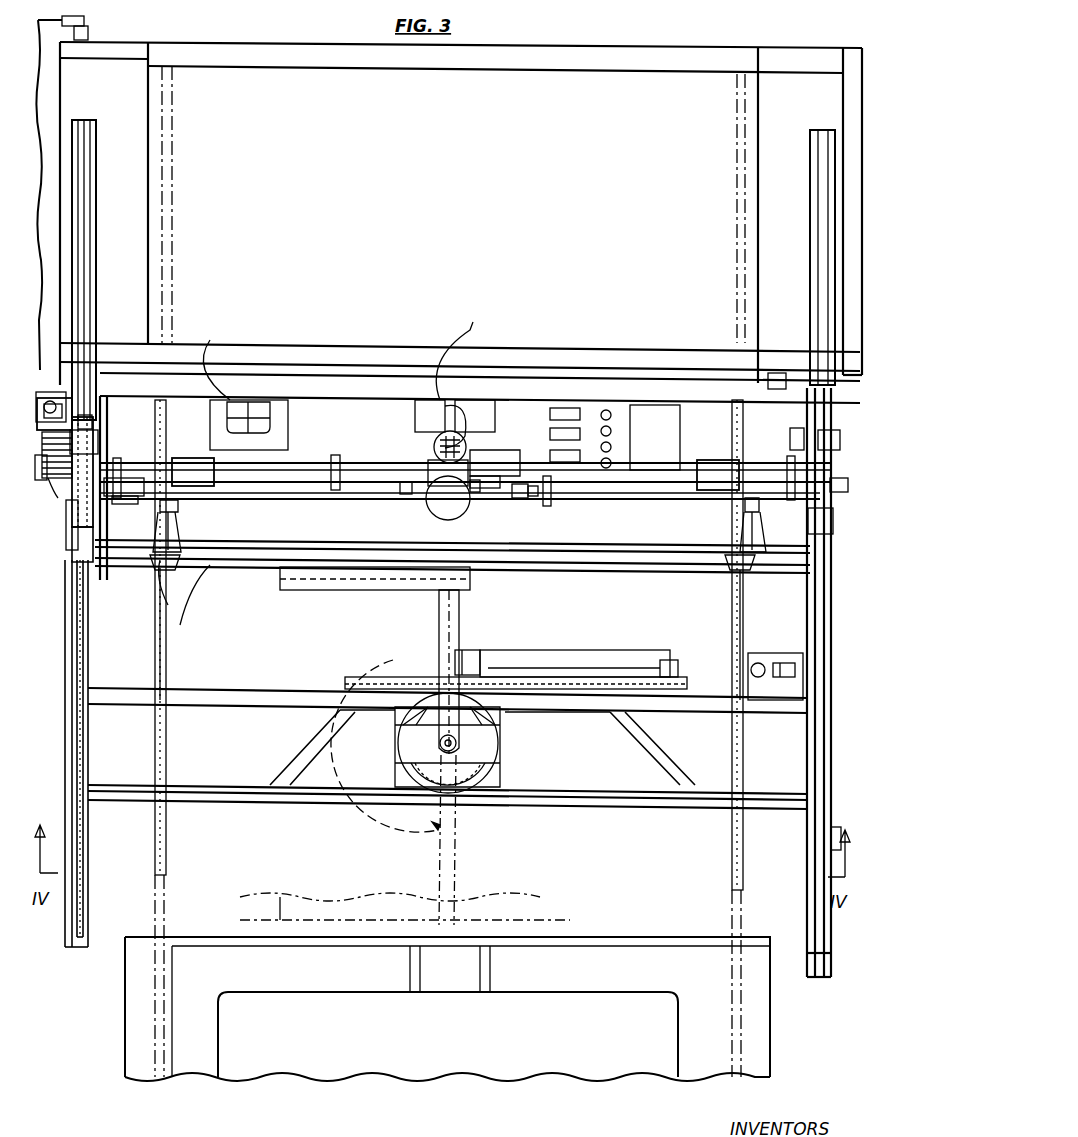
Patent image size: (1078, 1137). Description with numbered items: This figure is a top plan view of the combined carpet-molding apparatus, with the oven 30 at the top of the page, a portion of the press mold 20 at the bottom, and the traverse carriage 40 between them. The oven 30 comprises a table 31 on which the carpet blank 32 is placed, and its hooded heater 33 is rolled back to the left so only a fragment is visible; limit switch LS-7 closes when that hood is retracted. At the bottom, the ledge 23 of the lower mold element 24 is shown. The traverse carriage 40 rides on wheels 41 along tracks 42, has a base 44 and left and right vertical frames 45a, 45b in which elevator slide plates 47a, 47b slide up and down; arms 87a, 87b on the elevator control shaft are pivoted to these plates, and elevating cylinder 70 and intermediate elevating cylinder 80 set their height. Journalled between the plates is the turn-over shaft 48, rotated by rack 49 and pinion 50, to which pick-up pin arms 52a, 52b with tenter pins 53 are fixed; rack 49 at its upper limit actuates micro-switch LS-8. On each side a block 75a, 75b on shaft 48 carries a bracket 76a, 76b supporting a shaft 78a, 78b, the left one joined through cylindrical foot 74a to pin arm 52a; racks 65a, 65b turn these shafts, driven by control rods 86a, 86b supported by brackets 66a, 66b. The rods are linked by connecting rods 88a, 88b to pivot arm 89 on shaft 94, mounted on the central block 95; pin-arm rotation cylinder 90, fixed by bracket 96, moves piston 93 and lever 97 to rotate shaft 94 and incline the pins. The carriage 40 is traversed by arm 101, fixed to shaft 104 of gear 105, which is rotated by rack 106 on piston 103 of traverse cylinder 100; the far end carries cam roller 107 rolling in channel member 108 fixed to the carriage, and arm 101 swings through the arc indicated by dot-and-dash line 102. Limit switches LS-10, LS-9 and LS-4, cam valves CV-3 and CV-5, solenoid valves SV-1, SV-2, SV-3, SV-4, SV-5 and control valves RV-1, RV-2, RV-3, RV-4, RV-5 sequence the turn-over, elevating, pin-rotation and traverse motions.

The press mold 20 is at (110, 1080).
The ledge 23 is at (330, 1000).
The lower mold element 24 is at (260, 980).
The oven 30 is at (78, 116).
The table 31 is at (722, 58).
The carpet blank 32 is at (600, 88).
The hooded heater 33 is at (50, 268).
The traverse carriage 40 is at (58, 645).
The wheels 41 is at (86, 333).
The tracks 42 is at (84, 872).
The base 44 is at (230, 568).
The left vertical frame 45a is at (66, 535).
The right vertical frame 45b is at (833, 521).
The left elevator slide plate 47a is at (98, 445).
The right elevator slide plate 47b is at (839, 445).
The turn-over shaft 48 is at (309, 468).
The rack 49 is at (92, 425).
The pinion 50 is at (51, 458).
The left pick-up pin arm 52a is at (168, 165).
The right pick-up pin arm 52b is at (740, 150).
The tenter pins 53 is at (165, 740).
The rack 65a is at (150, 490).
The rack 65b is at (785, 510).
The brackets 66a is at (128, 510).
The brackets 66b is at (548, 508).
The elevating cylinder 70 is at (425, 505).
The cylindrical foot 74a is at (184, 588).
The block 75a is at (191, 458).
The block 75b is at (711, 460).
The bracket 76a is at (185, 508).
The bracket 76b is at (740, 508).
The shaft 78a is at (180, 530).
The shaft 78b is at (742, 532).
The intermediate elevating cylinder 80 is at (432, 440).
The pin-arm rotation control rods 86a is at (260, 500).
The pin-arm rotation control rods 86b is at (600, 498).
The arm 87a is at (141, 627).
The arm 87b is at (738, 545).
The connecting rod 88a is at (340, 493).
The connecting rod 88b is at (512, 510).
The pivot arm 89 is at (401, 498).
The pin-arm rotation cylinder 90 is at (508, 448).
The piston 93 is at (463, 357).
The shaft 94 is at (428, 474).
The block 95 is at (505, 468).
The bracket 96 is at (495, 395).
The lever 97 is at (476, 495).
The traverse cylinder 100 is at (562, 668).
The arm 101 is at (439, 608).
The dot-and-dash line 102 is at (392, 828).
The piston 103 is at (468, 648).
The shaft 104 is at (456, 740).
The gear 105 is at (500, 770).
The rack 106 is at (585, 700).
The cam roller 107 is at (470, 578).
The cam-follower channel member 108 is at (345, 580).
The limit switch LS-4 is at (831, 872).
The limit switch LS-7 is at (88, 30).
The micro-switch LS-8 is at (68, 405).
The limit switch LS-9 is at (810, 995).
The limit switch LS-10 is at (777, 372).
The control valve RV-1 is at (244, 383).
The control valve RV-2 is at (320, 385).
The control valve RV-3 is at (562, 407).
The control valve RV-4 is at (580, 425).
The control valve RV-5 is at (600, 452).
The solenoid pneumatic valve SV-1 is at (612, 415).
The solenoid pneumatic valve SV-2 is at (612, 463).
The solenoid valve SV-3 is at (612, 447).
The solenoid valve SV-4 is at (612, 431).
The solenoid valve SV-5 is at (758, 663).
The cam valve CV-3 is at (785, 663).
The cam valve CV-5 is at (790, 438).